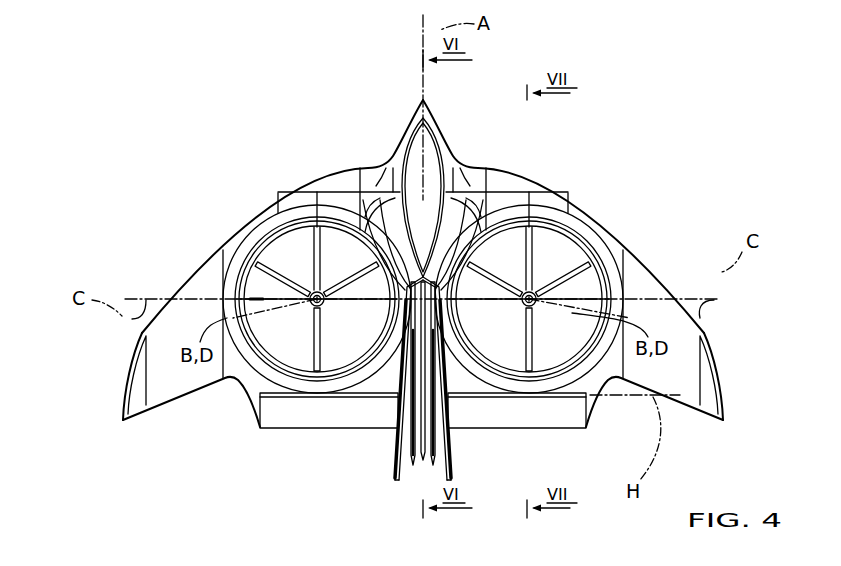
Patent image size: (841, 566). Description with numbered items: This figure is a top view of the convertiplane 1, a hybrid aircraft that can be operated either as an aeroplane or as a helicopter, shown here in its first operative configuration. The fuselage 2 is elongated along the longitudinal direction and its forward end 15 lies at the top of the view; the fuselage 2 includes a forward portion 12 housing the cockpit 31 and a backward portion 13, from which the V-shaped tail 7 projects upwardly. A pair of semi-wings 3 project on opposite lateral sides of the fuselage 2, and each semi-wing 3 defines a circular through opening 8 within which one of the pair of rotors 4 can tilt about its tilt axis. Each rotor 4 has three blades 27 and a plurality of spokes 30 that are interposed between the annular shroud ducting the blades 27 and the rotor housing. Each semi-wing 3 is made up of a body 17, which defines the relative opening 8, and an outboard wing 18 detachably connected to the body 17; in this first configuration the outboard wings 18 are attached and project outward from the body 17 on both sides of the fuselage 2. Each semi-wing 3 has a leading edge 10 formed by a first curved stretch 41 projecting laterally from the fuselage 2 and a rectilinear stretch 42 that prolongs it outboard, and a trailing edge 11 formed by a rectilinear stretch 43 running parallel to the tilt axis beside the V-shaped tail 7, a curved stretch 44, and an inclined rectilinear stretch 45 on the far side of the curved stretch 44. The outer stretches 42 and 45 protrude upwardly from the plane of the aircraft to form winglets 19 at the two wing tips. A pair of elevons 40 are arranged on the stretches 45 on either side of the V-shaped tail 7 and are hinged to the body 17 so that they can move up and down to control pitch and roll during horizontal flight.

The convertiplane 1 is at (143, 150).
The fuselage 2 is at (443, 137).
The semi-wings 3 is at (228, 228).
The rotors 4 is at (556, 269).
The V-shaped tail 7 is at (397, 452).
The through openings 8 is at (297, 214).
The leading edge 10 is at (306, 150).
The trailing edge 11 is at (210, 397).
The forward portion 12 is at (409, 115).
The backward portion 13 is at (422, 346).
The forward end 15 is at (426, 98).
The body 17 is at (560, 182).
The outboard wings 18 is at (178, 318).
The winglets 19 is at (118, 390).
The blades 27 is at (355, 320).
The spokes 30 is at (268, 298).
The cockpit 31 is at (413, 147).
The elevons 40 is at (300, 420).
The first curved stretch 41 is at (327, 173).
The rectilinear stretch 42 is at (193, 277).
The rectilinear stretch 43 is at (315, 428).
The curved stretch 44 is at (250, 412).
The rectilinear stretch 45 is at (182, 398).